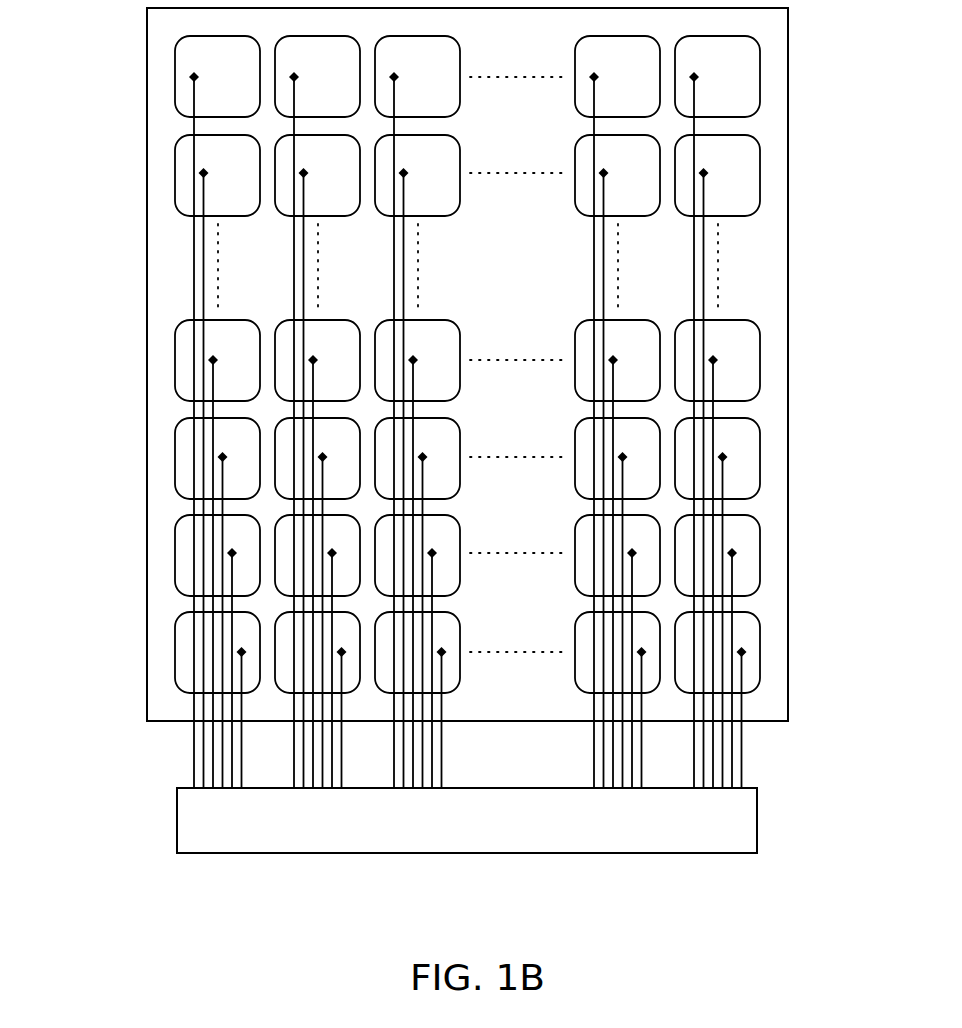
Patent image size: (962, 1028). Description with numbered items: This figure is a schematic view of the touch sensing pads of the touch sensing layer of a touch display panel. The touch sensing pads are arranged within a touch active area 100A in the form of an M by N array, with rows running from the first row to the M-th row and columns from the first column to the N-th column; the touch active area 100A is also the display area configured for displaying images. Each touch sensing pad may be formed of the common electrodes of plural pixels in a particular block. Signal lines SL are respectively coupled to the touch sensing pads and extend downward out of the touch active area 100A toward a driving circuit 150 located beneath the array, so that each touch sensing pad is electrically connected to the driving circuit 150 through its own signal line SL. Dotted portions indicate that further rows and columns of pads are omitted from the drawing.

The touch active area 100A is at (788, 335).
The signal lines SL is at (193, 754).
The driving circuit 150 is at (758, 820).